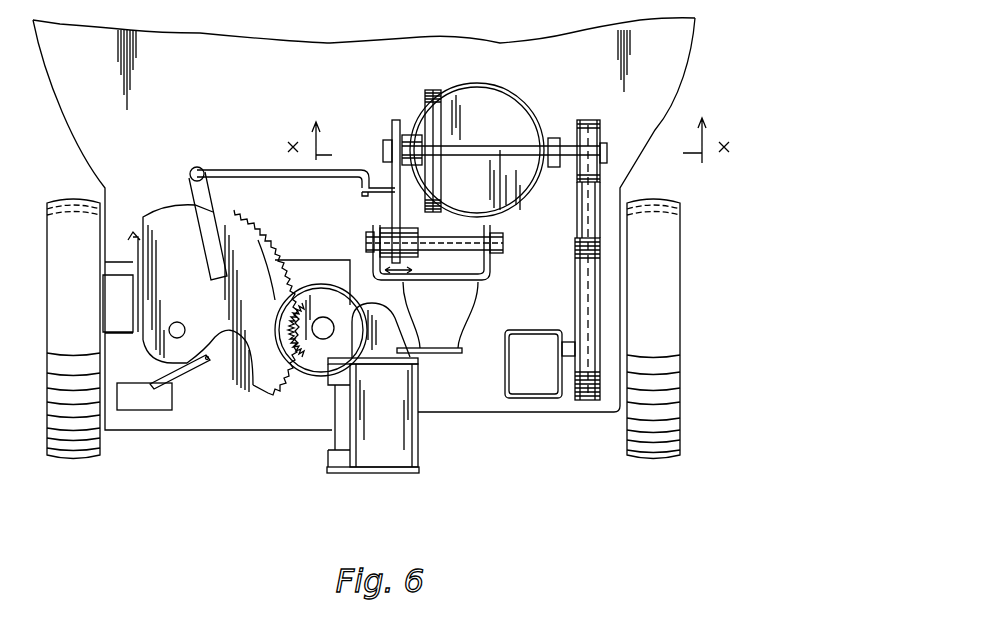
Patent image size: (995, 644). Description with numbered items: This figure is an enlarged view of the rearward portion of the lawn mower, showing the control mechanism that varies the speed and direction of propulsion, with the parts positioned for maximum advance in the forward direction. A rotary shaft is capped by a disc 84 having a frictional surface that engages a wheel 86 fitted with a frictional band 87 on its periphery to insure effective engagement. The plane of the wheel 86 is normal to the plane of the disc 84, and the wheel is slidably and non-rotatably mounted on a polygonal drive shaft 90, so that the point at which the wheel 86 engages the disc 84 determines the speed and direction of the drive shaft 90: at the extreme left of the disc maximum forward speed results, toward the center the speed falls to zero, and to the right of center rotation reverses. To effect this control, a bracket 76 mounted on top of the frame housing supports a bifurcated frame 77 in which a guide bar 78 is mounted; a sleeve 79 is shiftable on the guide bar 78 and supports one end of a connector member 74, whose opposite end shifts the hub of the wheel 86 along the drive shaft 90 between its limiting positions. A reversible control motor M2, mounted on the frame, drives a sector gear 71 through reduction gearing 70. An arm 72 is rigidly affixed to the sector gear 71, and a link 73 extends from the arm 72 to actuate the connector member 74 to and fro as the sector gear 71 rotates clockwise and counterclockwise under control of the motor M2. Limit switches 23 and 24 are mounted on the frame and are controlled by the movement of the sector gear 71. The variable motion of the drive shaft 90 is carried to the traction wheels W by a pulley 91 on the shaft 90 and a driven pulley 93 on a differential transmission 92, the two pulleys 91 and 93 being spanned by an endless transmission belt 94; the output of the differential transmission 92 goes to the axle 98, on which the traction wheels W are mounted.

The limit switch 23 is at (130, 305).
The limit switch 24 is at (130, 395).
The reduction gearing 70 is at (312, 360).
The sector gear 71 is at (256, 257).
The arm 72 is at (190, 200).
The link 73 is at (238, 170).
The connector member 74 is at (392, 200).
The bracket 76 is at (437, 353).
The bifurcated frame 77 is at (478, 282).
The guide bar 78 is at (445, 235).
The sleeve 79 is at (418, 253).
The disc 84 is at (515, 100).
The wheel 86 is at (422, 105).
The frictional band 87 is at (440, 95).
The polygonal drive shaft 90 is at (525, 150).
The pulley 91 is at (603, 130).
The differential transmission 92 is at (545, 410).
The driven pulley 93 is at (575, 325).
The endless transmission belt 94 is at (578, 218).
The axle 98 is at (100, 330).
The traction wheels W is at (62, 440).
The control motor M2 is at (412, 435).